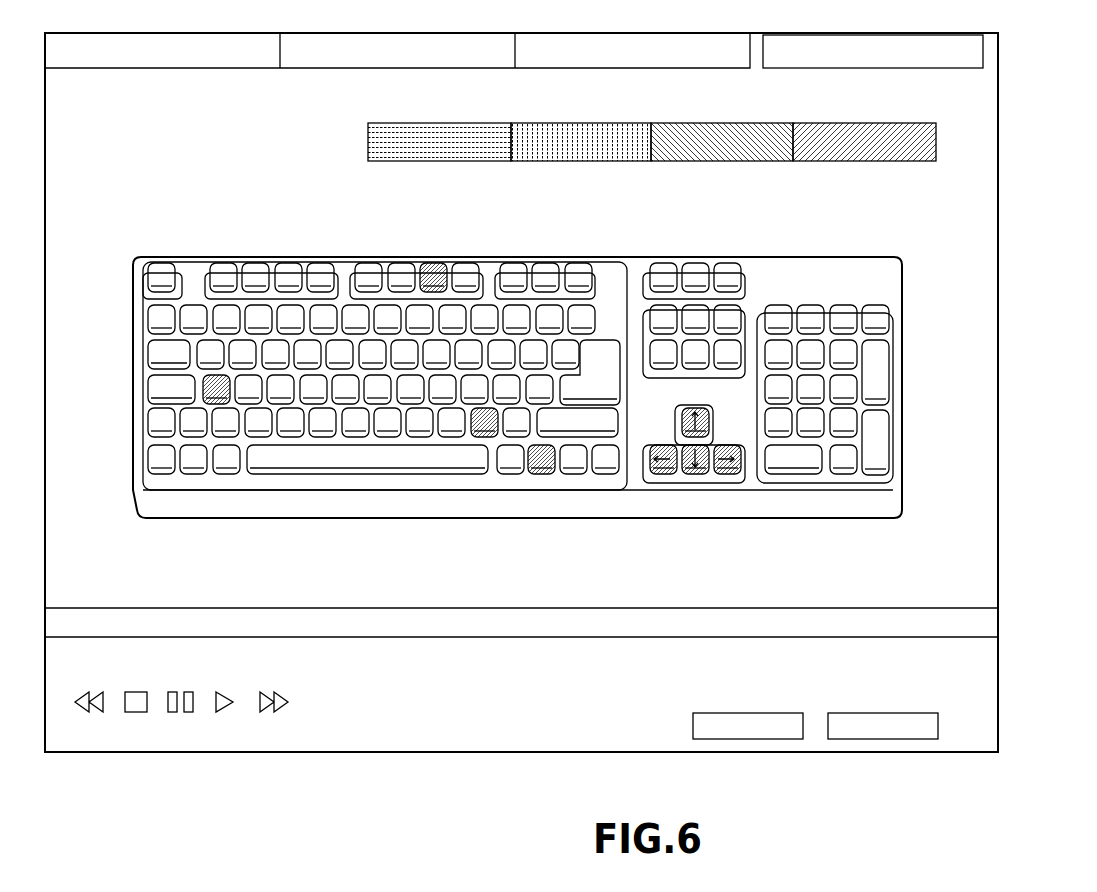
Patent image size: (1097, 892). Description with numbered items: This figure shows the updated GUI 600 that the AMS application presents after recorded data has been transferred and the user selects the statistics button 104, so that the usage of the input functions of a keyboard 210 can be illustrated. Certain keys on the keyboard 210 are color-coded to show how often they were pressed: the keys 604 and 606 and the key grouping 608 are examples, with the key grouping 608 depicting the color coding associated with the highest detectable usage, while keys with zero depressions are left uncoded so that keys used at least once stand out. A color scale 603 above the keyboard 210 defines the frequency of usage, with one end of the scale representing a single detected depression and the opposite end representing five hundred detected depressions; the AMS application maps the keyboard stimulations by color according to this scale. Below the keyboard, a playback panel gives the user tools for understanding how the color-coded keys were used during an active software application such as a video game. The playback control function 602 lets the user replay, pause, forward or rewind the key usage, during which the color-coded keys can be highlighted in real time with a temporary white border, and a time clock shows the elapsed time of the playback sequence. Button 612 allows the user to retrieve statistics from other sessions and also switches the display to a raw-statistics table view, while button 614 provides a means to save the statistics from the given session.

The playback user interface 600 is at (372, 812).
The button 104 is at (347, 69).
The button 612 is at (936, 70).
The button 614 is at (879, 739).
The color scale 603 is at (578, 161).
The keyboard 210 is at (433, 263).
The keys 604 is at (240, 528).
The keys 606 is at (587, 528).
The key grouping 608 is at (740, 528).
The playback control function 602 is at (283, 718).